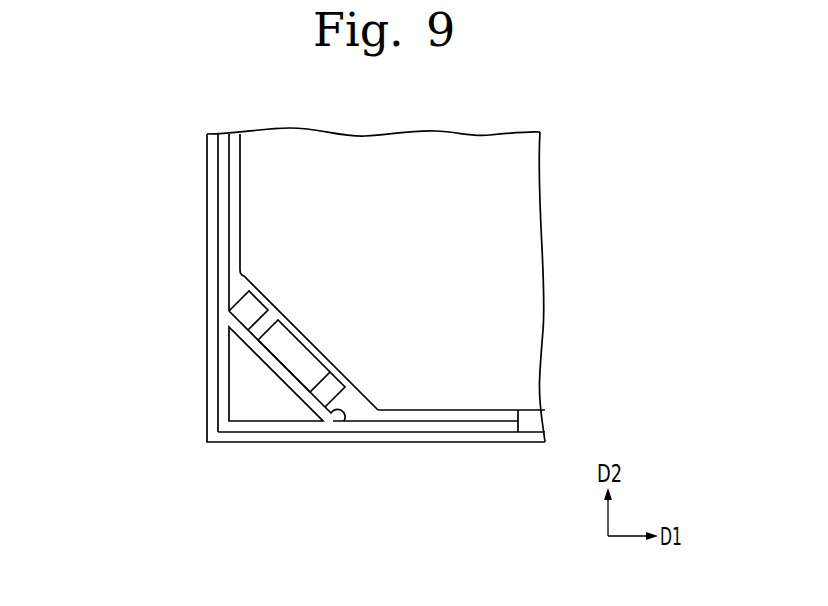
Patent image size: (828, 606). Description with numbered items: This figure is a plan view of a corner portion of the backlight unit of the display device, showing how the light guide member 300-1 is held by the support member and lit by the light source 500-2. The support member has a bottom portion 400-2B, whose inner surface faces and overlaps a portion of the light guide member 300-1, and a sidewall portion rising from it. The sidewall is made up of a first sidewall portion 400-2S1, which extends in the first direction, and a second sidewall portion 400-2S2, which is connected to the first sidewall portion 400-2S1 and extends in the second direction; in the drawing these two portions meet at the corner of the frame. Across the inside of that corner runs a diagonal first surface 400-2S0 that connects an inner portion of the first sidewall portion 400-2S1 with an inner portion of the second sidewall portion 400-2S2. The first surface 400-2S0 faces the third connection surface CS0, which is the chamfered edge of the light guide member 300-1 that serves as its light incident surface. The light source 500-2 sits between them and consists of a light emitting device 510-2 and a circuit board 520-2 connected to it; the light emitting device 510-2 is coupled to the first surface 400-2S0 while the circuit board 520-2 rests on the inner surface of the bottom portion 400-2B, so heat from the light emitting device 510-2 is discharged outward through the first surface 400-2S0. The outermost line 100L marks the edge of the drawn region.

The light guide member 300-1 is at (528, 253).
The display panel edge line 100L is at (526, 437).
The second sidewall portion 400-2S2 is at (225, 195).
The first sidewall portion 400-2S1 is at (440, 427).
The first surface 400-2S0 is at (343, 412).
The bottom portion 400-2B is at (504, 413).
The third connection surface CS0 is at (253, 284).
The light source 500-2 is at (183, 349).
The circuit board 520-2 is at (262, 321).
The light emitting device 510-2 is at (290, 356).